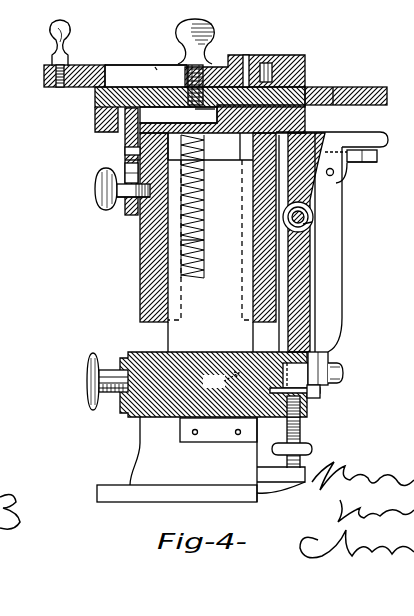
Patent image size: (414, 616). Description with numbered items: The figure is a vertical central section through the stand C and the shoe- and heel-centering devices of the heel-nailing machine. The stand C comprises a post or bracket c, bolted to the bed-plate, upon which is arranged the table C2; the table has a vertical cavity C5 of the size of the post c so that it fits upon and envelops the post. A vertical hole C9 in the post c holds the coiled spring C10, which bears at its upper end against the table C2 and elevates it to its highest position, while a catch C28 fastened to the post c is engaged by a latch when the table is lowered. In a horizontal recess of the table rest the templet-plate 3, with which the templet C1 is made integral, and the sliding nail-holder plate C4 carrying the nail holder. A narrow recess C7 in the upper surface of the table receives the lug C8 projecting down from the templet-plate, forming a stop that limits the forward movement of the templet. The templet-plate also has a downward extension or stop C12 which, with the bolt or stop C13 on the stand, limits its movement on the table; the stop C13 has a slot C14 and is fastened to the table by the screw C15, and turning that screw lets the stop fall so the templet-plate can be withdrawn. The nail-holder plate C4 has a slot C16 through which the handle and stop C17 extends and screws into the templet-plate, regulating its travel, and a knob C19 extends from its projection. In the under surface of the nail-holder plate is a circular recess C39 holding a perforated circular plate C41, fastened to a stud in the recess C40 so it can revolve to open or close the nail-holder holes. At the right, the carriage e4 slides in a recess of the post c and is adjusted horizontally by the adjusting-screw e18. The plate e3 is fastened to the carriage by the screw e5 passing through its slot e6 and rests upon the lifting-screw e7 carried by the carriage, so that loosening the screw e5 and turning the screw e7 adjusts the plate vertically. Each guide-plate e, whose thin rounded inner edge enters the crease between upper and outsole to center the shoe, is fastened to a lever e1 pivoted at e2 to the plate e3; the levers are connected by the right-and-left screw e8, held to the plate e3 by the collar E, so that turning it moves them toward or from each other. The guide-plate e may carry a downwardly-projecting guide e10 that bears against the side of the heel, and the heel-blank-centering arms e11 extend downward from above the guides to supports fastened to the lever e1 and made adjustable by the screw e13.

The handle or knob C19 is at (72, 43).
The nail-holder plate C4 is at (104, 66).
The slot C16 is at (134, 70).
The stand C is at (146, 75).
The templet-plate 3 is at (157, 62).
The handle and stop C17 is at (202, 55).
The circular plate C41 is at (242, 54).
The circular recess C39 is at (310, 68).
The recess for a stud C40 is at (273, 53).
The table C2 is at (305, 52).
The templet C1 is at (207, 308).
The downward extension or stop C12 is at (207, 308).
The narrow recess C7 is at (207, 308).
The lug C8 is at (205, 118).
The post or bracket c is at (210, 242).
The vertical hole or recess C9 is at (181, 207).
The coiled spring C10 is at (181, 233).
The slot C14 is at (95, 182).
The screw C15 is at (96, 198).
The vertical cavity or recess C5 is at (125, 150).
The bolt or stop C13 is at (122, 161).
The collar E is at (310, 263).
The lever e1 is at (207, 308).
The right-and-left screw or worm e8 is at (320, 229).
The guide-plate e is at (381, 147).
The arms e11 is at (352, 131).
The downwardly-projecting guide e10 is at (368, 163).
The screw e13 is at (337, 184).
The plate e3 is at (310, 318).
The carriage e4 is at (221, 380).
The adjusting-screw e18 is at (111, 398).
The slot e6 is at (330, 356).
The pivot e2 is at (345, 373).
The screw e5 is at (320, 396).
The lifting-screw e7 is at (301, 432).
The catch C28 is at (218, 430).